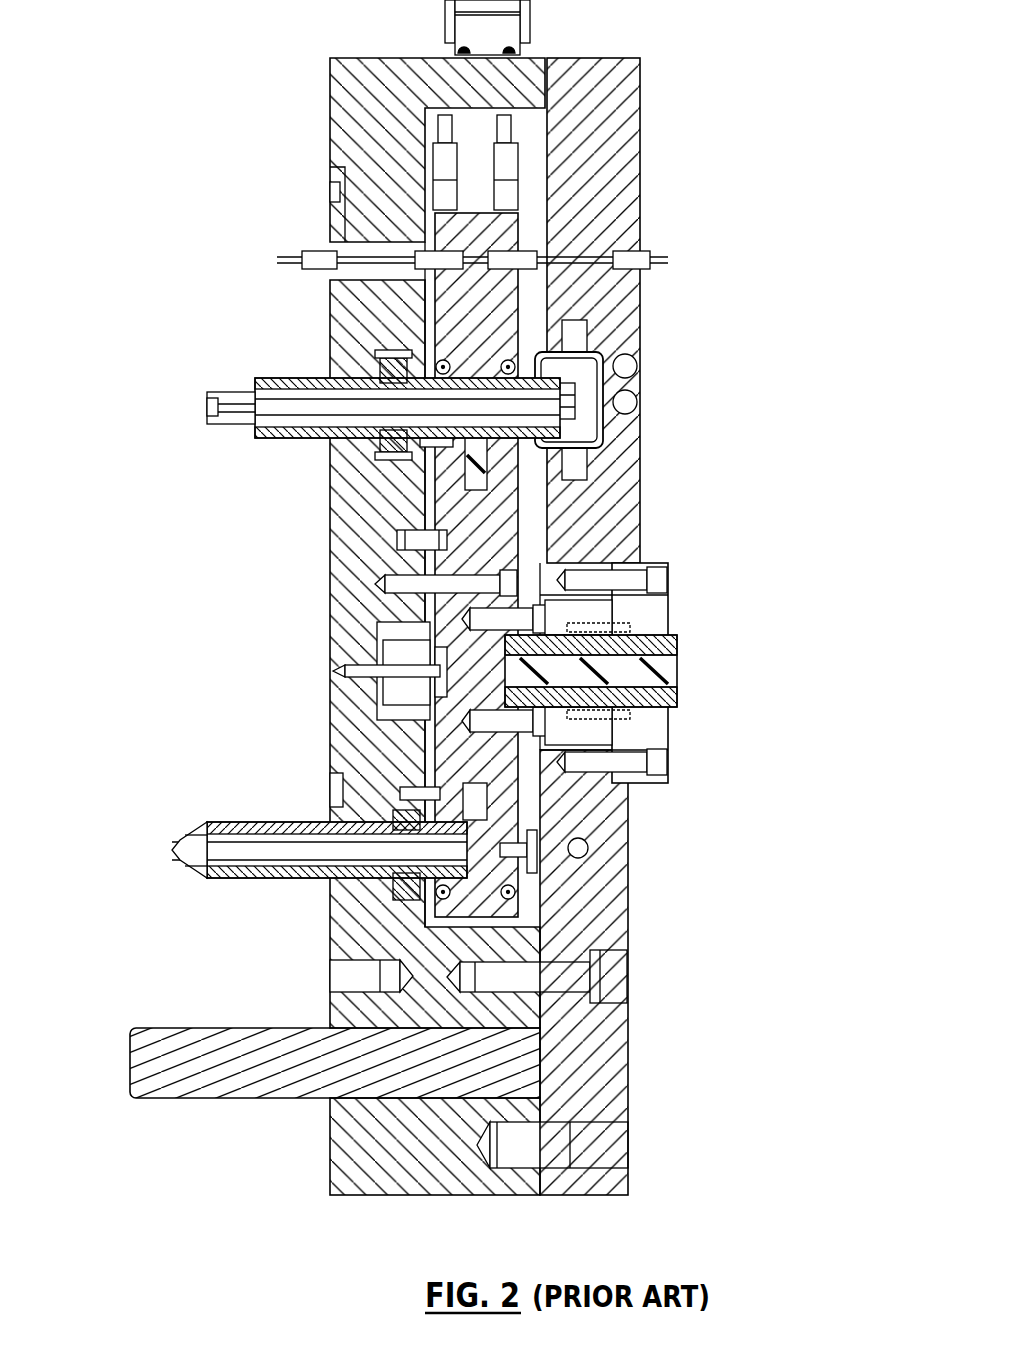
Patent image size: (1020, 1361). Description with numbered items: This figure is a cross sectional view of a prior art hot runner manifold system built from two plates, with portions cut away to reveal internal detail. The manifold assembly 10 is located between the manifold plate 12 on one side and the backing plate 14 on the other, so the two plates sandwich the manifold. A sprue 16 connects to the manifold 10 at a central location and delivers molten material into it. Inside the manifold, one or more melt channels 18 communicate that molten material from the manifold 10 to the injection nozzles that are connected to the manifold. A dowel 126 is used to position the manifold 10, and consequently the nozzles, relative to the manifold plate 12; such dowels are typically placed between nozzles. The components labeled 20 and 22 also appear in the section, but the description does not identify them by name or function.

The manifold assembly 10 is at (497, 313).
The manifold plate 12 is at (338, 575).
The backing plate 14 is at (632, 135).
The sprue 16 is at (690, 647).
The melt channel 18 is at (510, 477).
The nozzle 20 is at (207, 405).
The threaded shaft 22 is at (320, 372).
The dowel 126 is at (388, 529).